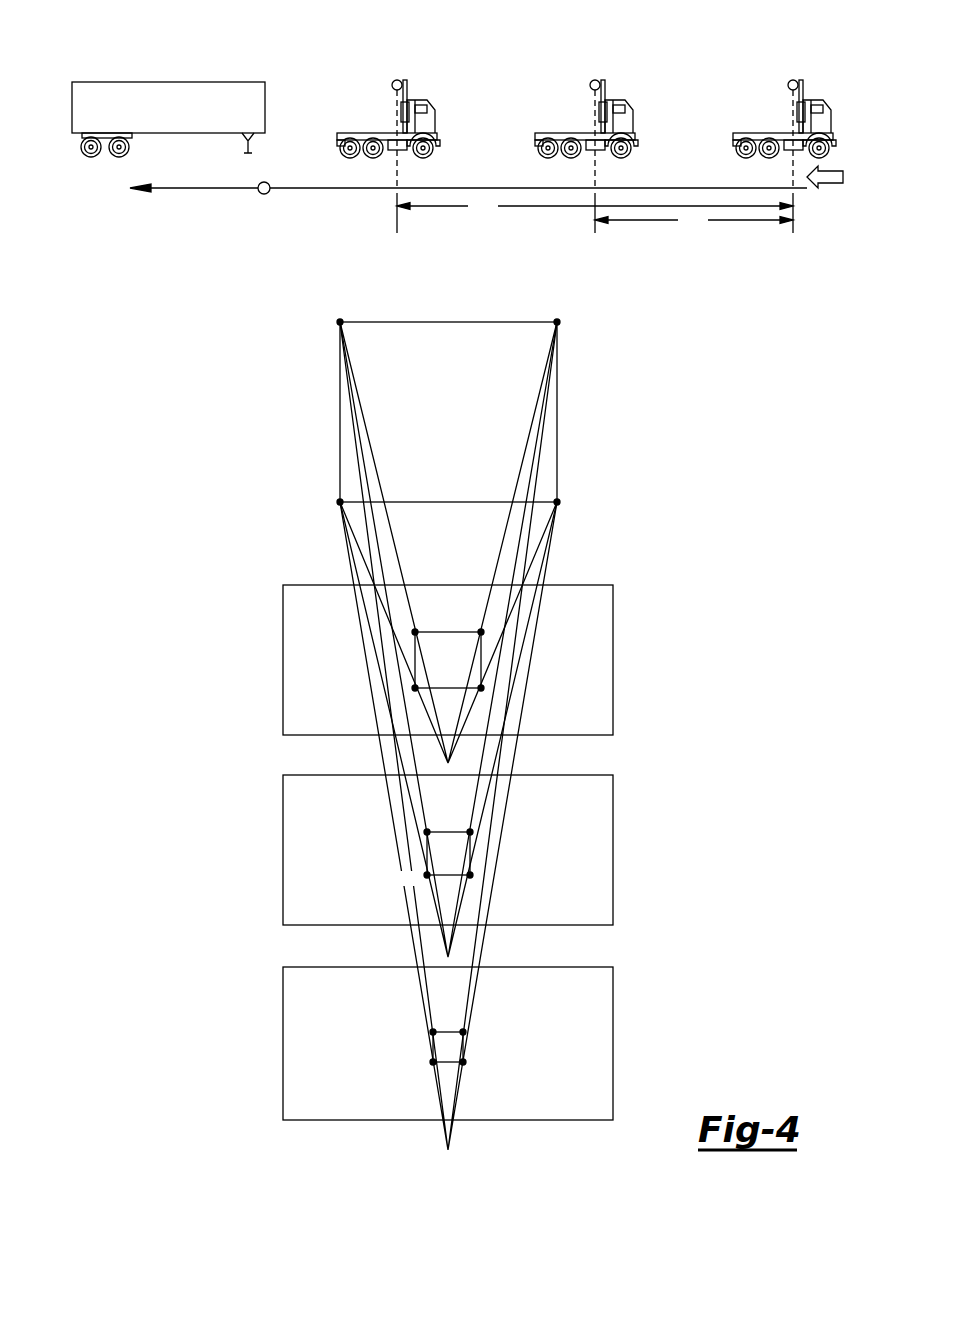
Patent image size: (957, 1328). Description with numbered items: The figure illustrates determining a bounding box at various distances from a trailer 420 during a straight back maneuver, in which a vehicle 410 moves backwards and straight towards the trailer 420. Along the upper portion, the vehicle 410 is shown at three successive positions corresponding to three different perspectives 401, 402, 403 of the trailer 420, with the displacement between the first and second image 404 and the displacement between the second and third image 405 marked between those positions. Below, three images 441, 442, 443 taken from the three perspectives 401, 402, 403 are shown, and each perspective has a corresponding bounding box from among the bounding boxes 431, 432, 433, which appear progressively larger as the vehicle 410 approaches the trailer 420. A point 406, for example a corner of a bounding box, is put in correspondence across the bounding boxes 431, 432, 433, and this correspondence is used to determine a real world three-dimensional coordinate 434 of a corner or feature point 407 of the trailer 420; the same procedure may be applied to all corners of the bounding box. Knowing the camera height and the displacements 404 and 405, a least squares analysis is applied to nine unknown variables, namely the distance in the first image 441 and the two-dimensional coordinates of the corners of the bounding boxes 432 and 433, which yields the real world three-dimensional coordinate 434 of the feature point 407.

The trailer 420 is at (168, 82).
The third perspective 403 is at (447, 423).
The second perspective 402 is at (489, 519).
The first perspective 401 is at (588, 619).
The vehicle 410 is at (437, 121).
The displacement between the second and third image 405 is at (595, 213).
The displacement between the first and second image 404 is at (694, 213).
The real world three-dimensional coordinate 434 is at (340, 412).
The feature point 407 is at (324, 503).
The third image 443 is at (283, 660).
The second image 442 is at (283, 848).
The first image 441 is at (283, 1037).
The bounding box 433 is at (481, 658).
The bounding box 432 is at (470, 852).
The bounding box 431 is at (463, 1047).
The point 406 is at (410, 878).